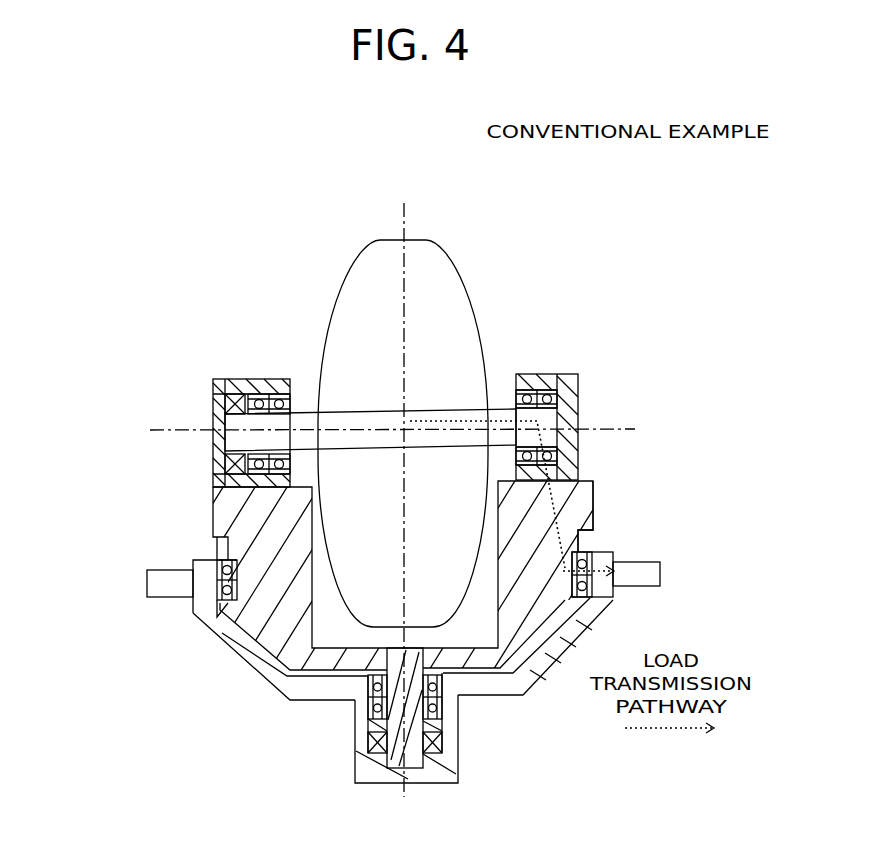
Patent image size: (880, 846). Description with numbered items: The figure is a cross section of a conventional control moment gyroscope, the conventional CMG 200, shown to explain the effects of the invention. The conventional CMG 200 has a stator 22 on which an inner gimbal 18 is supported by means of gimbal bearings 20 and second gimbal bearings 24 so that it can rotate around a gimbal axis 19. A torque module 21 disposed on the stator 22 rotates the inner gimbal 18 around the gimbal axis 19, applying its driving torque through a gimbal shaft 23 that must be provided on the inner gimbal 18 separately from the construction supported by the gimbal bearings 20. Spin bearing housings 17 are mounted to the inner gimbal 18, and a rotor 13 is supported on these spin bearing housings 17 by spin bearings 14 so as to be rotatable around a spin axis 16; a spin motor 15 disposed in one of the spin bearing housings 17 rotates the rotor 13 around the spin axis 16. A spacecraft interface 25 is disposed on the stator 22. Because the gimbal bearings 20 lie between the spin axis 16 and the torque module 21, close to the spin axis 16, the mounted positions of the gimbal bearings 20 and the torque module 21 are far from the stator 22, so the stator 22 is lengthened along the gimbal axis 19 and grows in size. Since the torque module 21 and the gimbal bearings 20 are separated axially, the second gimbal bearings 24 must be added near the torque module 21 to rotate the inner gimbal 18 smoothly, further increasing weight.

The conventional CMG 200 is at (130, 177).
The rotor 13 is at (455, 262).
The spin bearings 14 is at (266, 390).
The spin motor 15 is at (232, 388).
The spin axis 16 is at (622, 428).
The spin bearing housings 17 is at (572, 386).
The inner gimbal 18 is at (585, 515).
The gimbal axis 19 is at (404, 216).
The gimbal bearings 20 is at (223, 560).
The torque module 21 is at (362, 748).
The stator 22 is at (228, 633).
The gimbal shaft 23 is at (446, 724).
The second gimbal bearings 24 is at (362, 712).
The spacecraft interface 25 is at (158, 585).